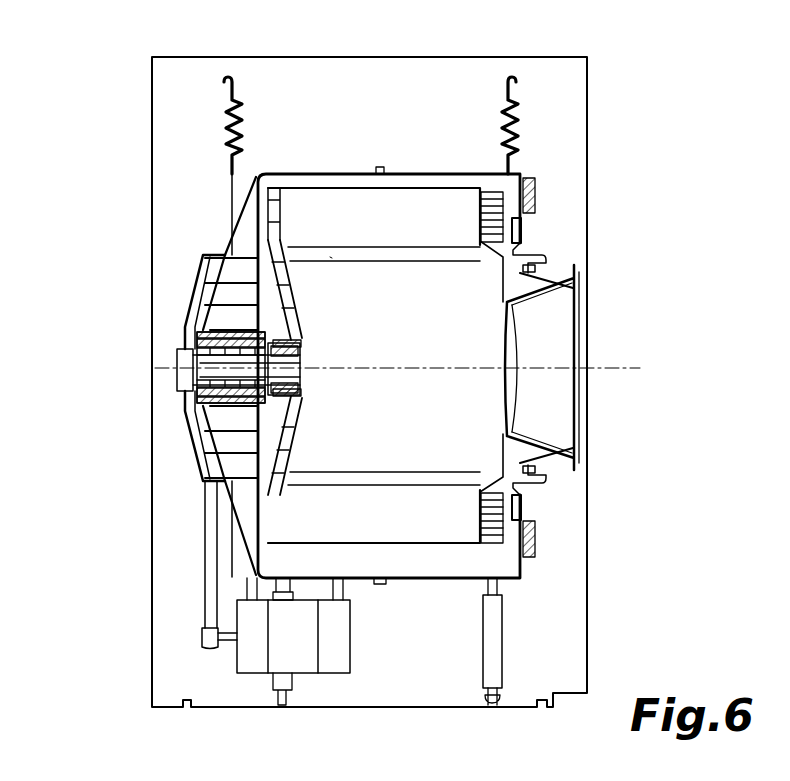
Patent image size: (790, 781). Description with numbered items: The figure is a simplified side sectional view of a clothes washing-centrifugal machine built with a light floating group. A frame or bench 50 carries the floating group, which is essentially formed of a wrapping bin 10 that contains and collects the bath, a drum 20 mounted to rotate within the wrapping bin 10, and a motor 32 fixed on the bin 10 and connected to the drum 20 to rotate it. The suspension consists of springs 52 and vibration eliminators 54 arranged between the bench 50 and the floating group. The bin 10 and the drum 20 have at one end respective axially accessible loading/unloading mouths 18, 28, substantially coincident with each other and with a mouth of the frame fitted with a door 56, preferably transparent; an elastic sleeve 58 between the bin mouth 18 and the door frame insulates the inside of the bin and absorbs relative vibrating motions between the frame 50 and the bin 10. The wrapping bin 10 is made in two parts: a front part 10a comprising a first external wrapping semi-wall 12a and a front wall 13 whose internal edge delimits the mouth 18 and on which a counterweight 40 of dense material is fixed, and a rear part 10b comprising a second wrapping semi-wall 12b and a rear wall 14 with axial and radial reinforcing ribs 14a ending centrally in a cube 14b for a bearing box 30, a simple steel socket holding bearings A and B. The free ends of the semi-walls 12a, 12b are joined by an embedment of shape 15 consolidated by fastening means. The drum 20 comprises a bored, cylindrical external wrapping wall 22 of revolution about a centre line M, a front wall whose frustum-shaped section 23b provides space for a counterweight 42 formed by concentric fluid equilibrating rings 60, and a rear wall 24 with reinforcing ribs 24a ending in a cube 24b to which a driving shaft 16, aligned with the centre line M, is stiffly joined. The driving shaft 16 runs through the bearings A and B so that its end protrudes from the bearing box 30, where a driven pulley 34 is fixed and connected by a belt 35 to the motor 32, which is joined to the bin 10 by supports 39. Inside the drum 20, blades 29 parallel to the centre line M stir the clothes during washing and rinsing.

The wrapping bin 10 is at (440, 562).
The front part 10a is at (445, 165).
The rear part 10b is at (313, 168).
The first external wrapping semi-wall 12a is at (420, 170).
The second wrapping semi-wall 12b is at (340, 170).
The front wall 13 is at (523, 212).
The rear wall 14 is at (258, 238).
The reinforcing ribs 14a is at (237, 292).
The cube 14b is at (200, 400).
The embedment of shape 15 is at (378, 167).
The driving shaft 16 is at (228, 387).
The loading/unloading mouth 18 is at (513, 287).
The drum 20 is at (443, 397).
The external wrapping wall 22 is at (347, 190).
The frustum-shaped section 23b is at (503, 255).
The rear wall 24 is at (300, 318).
The reinforcing ribs 24a is at (290, 452).
The cube 24b is at (300, 390).
The loading/unloading mouth 28 is at (513, 453).
The blades 29 is at (332, 257).
The bearing box 30 is at (228, 418).
The motor 32 is at (295, 640).
The driven pulley 34 is at (197, 475).
The belt 35 is at (213, 543).
The supports 39 is at (347, 590).
The counterweight 40 is at (536, 197).
The counterweight 42 is at (530, 176).
The frame or bench 50 is at (150, 143).
The springs 52 is at (228, 125).
The vibration eliminators 54 is at (270, 680).
The door 56 is at (520, 348).
The elastic sleeve 58 is at (540, 462).
The fluid equilibrating rings 60 is at (505, 227).
The bearing A is at (240, 315).
The bearing B is at (205, 345).
The centre line M is at (610, 368).